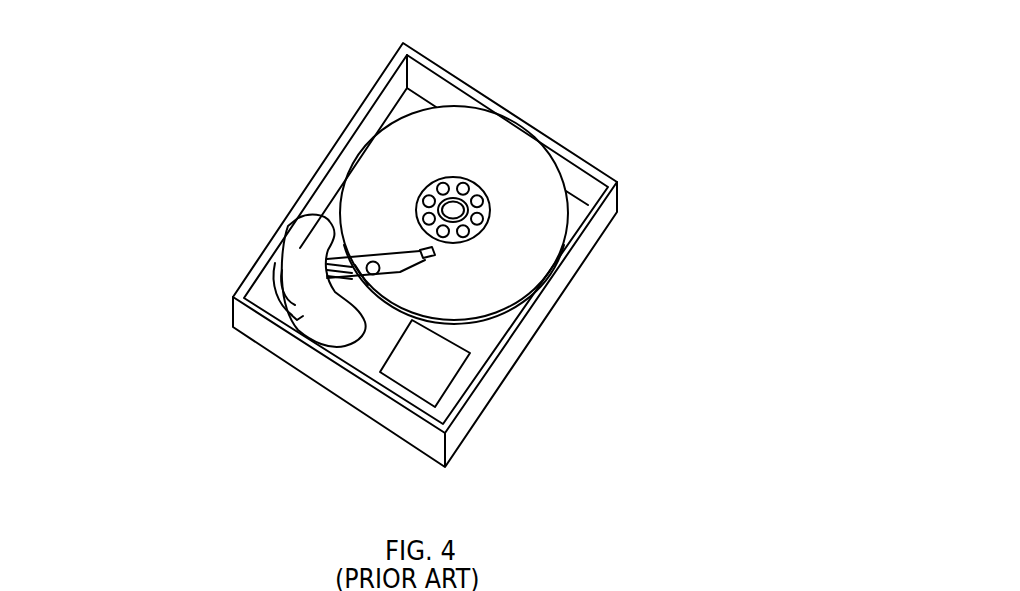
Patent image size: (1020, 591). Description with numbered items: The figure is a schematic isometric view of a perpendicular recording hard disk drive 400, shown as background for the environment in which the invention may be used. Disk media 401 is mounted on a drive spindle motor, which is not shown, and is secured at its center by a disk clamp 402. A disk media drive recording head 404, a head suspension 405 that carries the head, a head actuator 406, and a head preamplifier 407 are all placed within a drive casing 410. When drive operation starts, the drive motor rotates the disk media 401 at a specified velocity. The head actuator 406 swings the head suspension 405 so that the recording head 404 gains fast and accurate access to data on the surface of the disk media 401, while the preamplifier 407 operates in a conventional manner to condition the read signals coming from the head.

The perpendicular recording hard disk drive 400 is at (170, 358).
The disk media 401 is at (537, 172).
The disk clamp 402 is at (455, 205).
The disk media drive recording head 404 is at (432, 254).
The head suspension 405 is at (392, 260).
The head actuator 406 is at (302, 243).
The head preamplifier 407 is at (440, 365).
The drive casing 410 is at (340, 385).